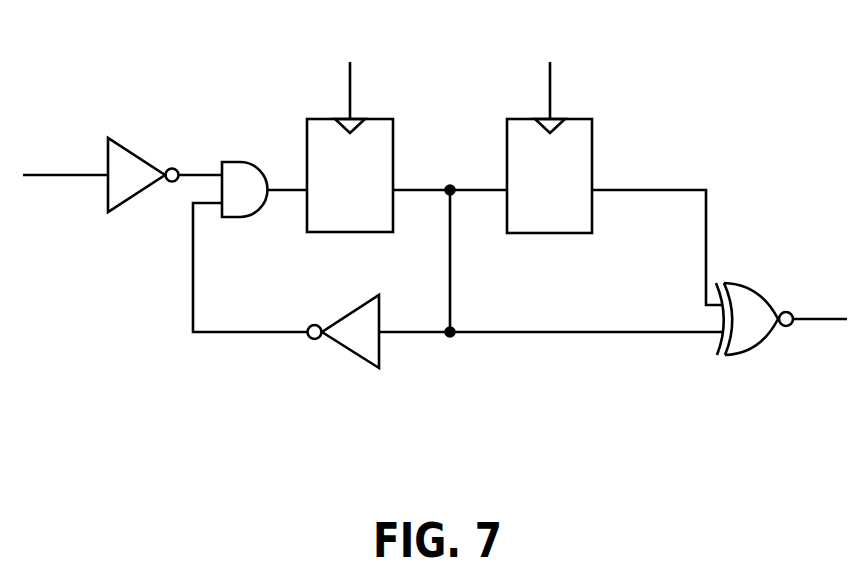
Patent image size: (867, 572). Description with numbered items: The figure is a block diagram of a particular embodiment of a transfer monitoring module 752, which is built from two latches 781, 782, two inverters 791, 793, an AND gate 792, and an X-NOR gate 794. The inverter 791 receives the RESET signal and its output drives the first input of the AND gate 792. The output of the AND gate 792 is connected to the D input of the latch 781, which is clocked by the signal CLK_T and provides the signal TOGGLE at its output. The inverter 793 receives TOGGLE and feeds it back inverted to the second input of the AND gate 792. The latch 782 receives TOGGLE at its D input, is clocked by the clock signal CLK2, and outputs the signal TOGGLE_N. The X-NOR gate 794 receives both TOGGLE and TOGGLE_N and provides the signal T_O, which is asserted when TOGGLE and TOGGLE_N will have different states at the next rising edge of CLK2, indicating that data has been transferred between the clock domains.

The transfer monitoring module 752 is at (435, 238).
The latch 781 is at (368, 227).
The latch 782 is at (568, 227).
The inverter 791 is at (145, 186).
The AND gate 792 is at (259, 199).
The inverter 793 is at (374, 342).
The X-NOR gate 794 is at (766, 327).